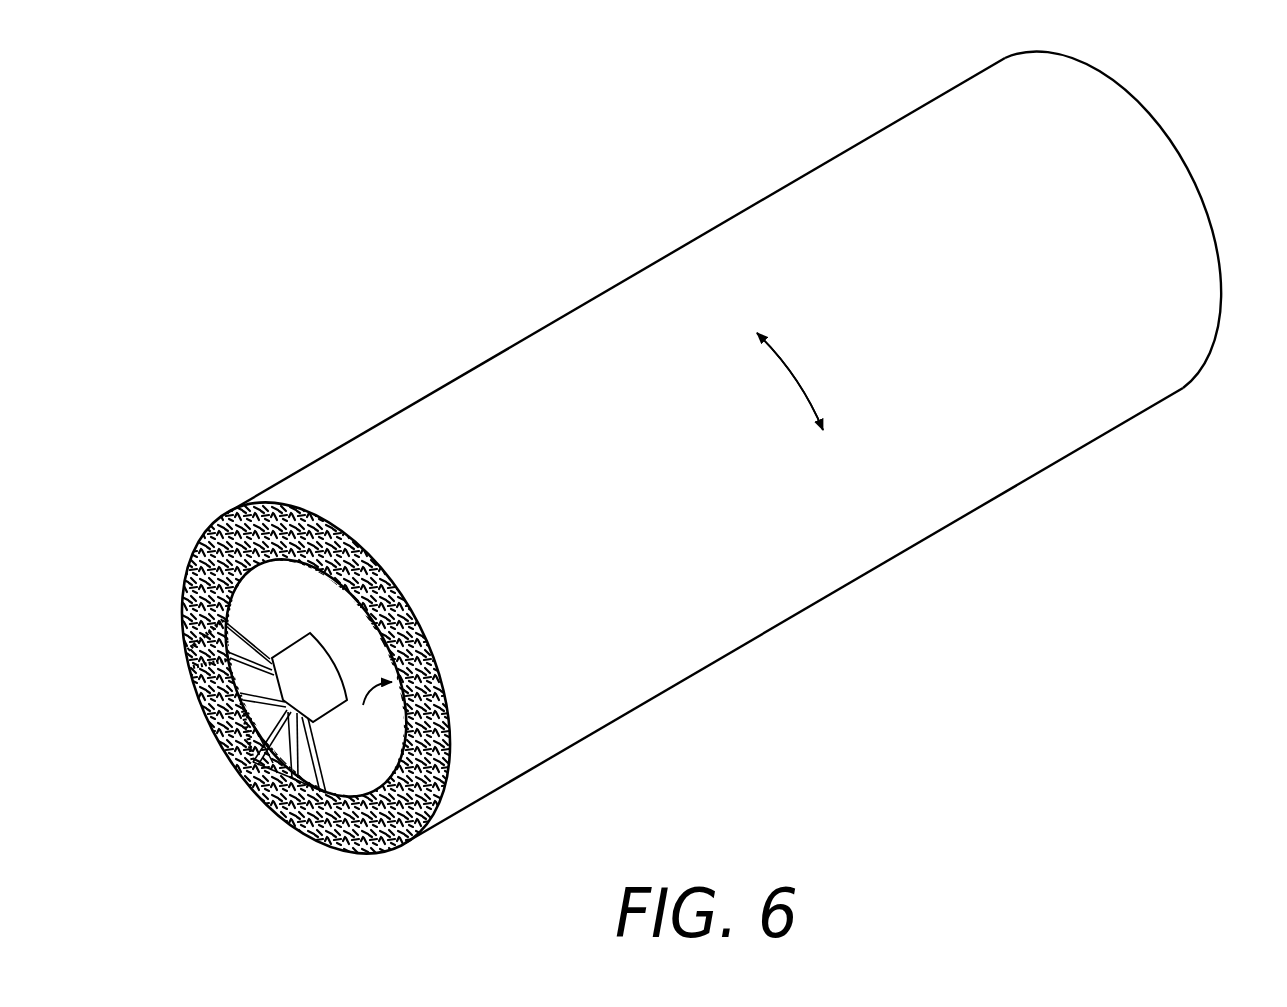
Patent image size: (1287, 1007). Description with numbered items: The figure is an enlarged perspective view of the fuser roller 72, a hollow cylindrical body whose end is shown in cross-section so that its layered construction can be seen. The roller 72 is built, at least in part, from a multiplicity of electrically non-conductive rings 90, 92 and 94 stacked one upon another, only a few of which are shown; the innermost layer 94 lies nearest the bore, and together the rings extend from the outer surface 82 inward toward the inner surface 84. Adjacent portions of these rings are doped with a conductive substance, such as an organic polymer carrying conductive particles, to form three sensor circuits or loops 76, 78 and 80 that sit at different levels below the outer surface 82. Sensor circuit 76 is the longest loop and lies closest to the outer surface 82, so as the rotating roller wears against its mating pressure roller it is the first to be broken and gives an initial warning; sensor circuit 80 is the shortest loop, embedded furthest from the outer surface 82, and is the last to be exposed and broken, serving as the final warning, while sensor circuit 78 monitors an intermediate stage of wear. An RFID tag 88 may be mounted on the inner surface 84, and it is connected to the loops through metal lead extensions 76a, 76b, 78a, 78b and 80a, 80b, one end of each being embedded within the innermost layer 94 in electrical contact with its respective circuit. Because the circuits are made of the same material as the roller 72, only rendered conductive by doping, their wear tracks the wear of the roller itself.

The fuser roller 72 is at (698, 212).
The outer surface 82 is at (615, 331).
The inner surface 84 is at (412, 715).
The RFID tag 88 is at (327, 672).
The electrically non-conductive ring 90 is at (188, 548).
The electrically non-conductive ring 92 is at (232, 523).
The innermost layer 94 is at (262, 548).
The sensor circuit 76 is at (220, 621).
The lead extension 76a is at (257, 652).
The lead extension 76b is at (237, 623).
The sensor circuit 78 is at (212, 751).
The lead extension 78a is at (252, 712).
The lead extension 78b is at (238, 692).
The sensor circuit 80 is at (307, 774).
The lead extension 80a is at (317, 772).
The lead extension 80b is at (303, 740).